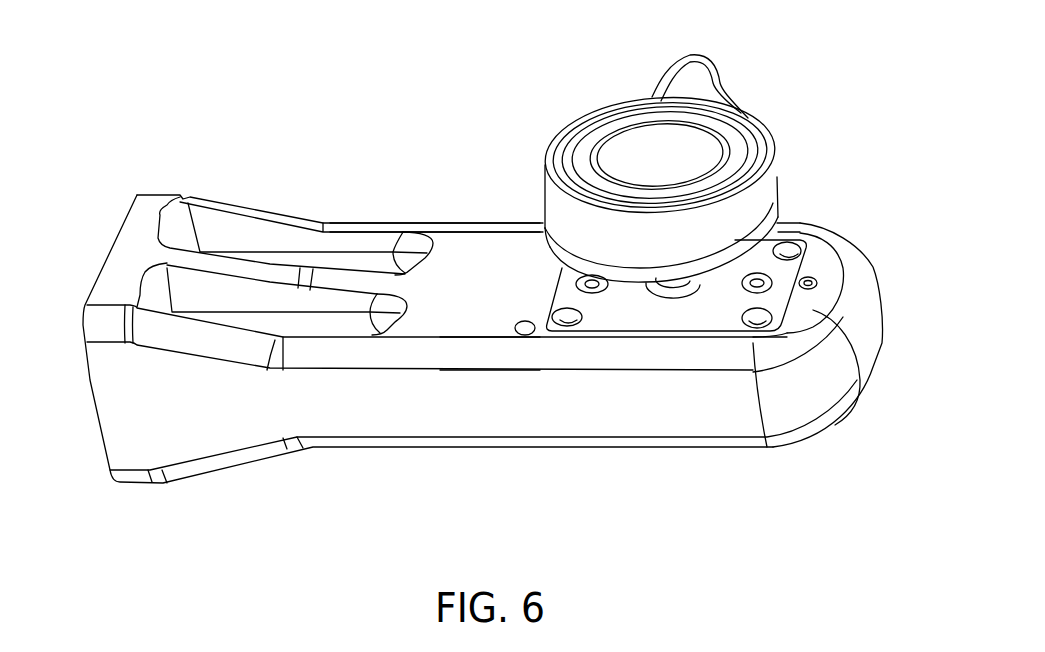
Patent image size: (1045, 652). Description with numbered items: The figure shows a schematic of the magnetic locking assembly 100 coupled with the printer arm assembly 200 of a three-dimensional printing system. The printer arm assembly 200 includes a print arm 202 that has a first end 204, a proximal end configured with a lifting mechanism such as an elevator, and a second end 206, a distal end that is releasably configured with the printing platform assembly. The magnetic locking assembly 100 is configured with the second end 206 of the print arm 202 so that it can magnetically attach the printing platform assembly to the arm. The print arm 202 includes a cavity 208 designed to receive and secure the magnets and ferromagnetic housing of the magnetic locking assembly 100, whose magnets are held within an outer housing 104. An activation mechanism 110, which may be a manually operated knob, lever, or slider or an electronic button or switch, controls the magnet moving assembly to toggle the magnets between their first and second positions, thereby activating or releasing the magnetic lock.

The magnetic locking assembly 100 is at (797, 155).
The activation mechanism 110 is at (583, 118).
The outer housing 104 is at (628, 322).
The printer arm assembly 200 is at (355, 155).
The print arm 202 is at (485, 223).
The first end 204 is at (113, 240).
The second end 206 is at (860, 327).
The cavity 208 is at (545, 290).